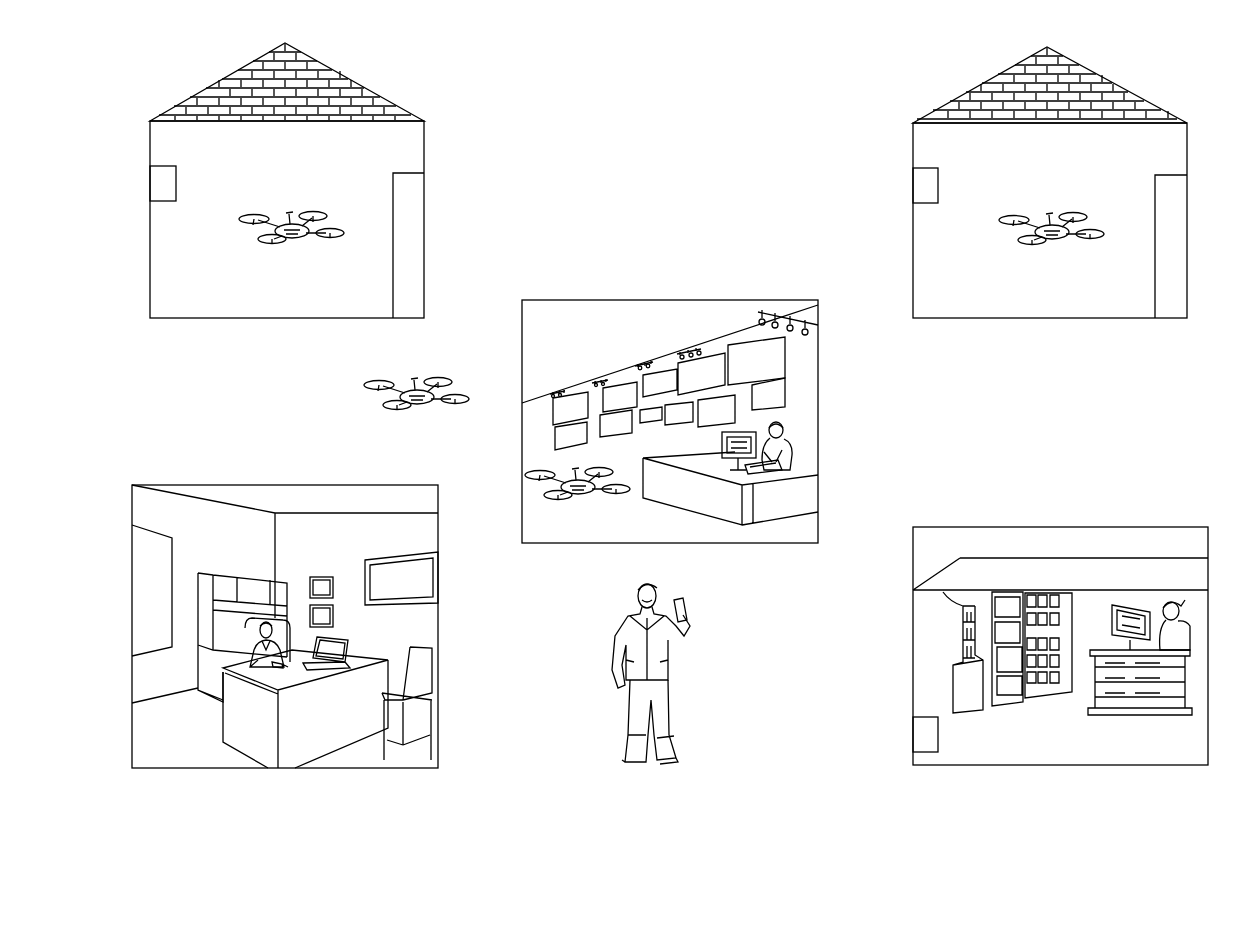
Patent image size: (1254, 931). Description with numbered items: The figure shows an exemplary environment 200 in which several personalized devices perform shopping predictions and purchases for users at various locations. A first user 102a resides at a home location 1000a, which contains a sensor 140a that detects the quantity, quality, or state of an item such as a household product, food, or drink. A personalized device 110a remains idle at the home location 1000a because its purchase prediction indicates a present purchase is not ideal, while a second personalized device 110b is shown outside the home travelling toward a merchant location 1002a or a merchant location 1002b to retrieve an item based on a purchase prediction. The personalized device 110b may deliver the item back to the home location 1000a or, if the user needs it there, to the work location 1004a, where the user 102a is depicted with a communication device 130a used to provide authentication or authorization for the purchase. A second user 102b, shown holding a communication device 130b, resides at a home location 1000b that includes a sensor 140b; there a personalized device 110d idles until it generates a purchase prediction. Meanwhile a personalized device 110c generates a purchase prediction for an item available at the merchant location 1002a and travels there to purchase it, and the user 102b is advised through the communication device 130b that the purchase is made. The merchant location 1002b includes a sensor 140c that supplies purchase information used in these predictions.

The environment 200 is at (702, 97).
The home location 1000a is at (360, 179).
The home location 1000b is at (1115, 181).
The merchant location 1002a is at (605, 352).
The merchant location 1002b is at (1187, 556).
The work location 1004a is at (285, 626).
The sensor 140a is at (176, 183).
The sensor 140b is at (938, 185).
The sensor 140c is at (938, 733).
The personalized device 110a is at (298, 236).
The personalized device 110b is at (440, 410).
The personalized device 110c is at (585, 492).
The personalized device 110d is at (1052, 238).
The user 102a is at (258, 650).
The user 102b is at (684, 674).
The communication device 130a is at (275, 667).
The communication device 130b is at (684, 608).